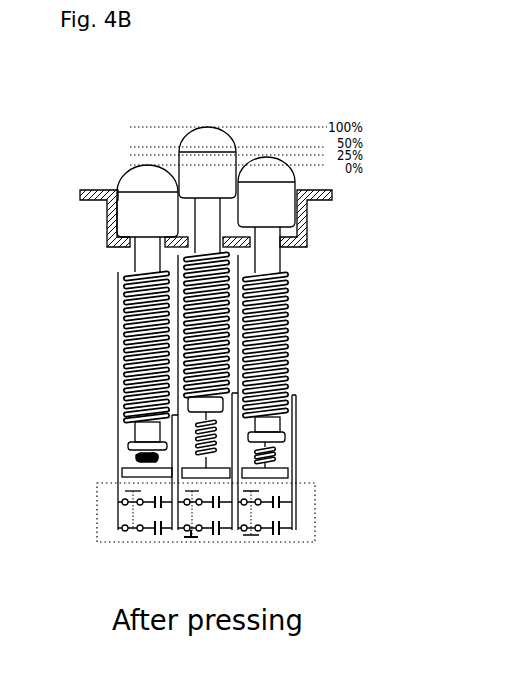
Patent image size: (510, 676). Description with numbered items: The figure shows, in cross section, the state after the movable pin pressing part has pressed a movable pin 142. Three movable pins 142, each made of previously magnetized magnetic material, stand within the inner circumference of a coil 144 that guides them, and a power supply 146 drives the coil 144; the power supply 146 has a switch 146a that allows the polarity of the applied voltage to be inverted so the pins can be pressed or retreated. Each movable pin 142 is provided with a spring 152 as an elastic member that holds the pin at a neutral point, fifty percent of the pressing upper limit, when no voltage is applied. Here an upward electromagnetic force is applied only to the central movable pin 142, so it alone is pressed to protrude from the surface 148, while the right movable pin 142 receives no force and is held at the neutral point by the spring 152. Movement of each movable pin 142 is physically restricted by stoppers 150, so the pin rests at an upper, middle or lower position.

The movable pin 142 is at (207, 127).
The coil 144 is at (147, 341).
The power supply 146 is at (97, 483).
The switch 146a is at (190, 540).
The surface 148 is at (302, 190).
The stoppers 150 is at (237, 200).
The spring 152 is at (135, 457).